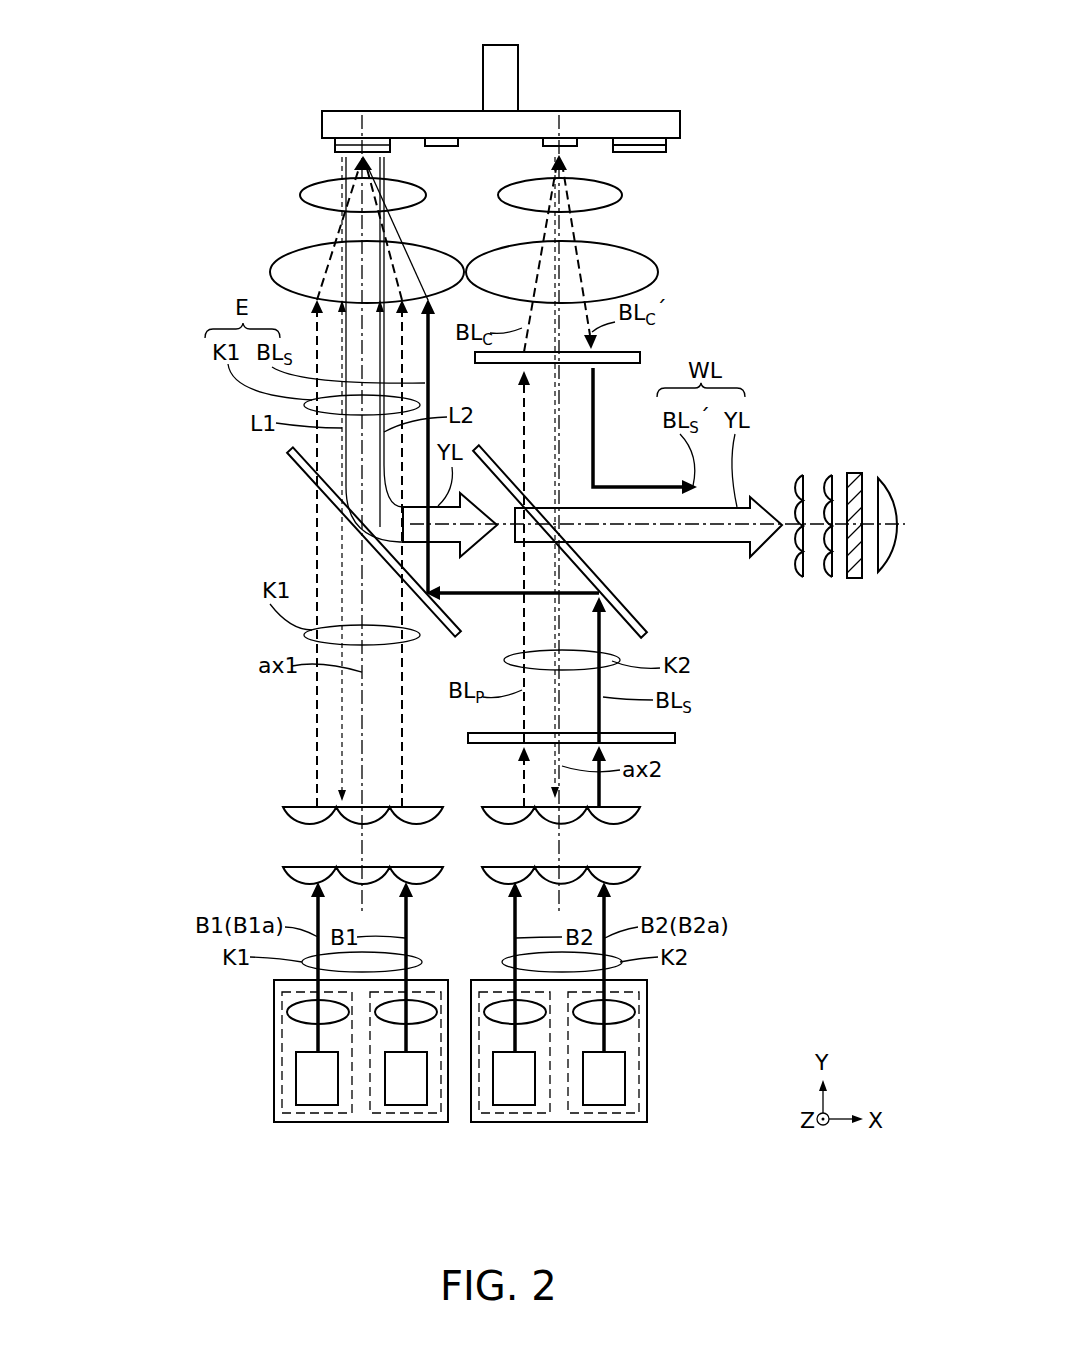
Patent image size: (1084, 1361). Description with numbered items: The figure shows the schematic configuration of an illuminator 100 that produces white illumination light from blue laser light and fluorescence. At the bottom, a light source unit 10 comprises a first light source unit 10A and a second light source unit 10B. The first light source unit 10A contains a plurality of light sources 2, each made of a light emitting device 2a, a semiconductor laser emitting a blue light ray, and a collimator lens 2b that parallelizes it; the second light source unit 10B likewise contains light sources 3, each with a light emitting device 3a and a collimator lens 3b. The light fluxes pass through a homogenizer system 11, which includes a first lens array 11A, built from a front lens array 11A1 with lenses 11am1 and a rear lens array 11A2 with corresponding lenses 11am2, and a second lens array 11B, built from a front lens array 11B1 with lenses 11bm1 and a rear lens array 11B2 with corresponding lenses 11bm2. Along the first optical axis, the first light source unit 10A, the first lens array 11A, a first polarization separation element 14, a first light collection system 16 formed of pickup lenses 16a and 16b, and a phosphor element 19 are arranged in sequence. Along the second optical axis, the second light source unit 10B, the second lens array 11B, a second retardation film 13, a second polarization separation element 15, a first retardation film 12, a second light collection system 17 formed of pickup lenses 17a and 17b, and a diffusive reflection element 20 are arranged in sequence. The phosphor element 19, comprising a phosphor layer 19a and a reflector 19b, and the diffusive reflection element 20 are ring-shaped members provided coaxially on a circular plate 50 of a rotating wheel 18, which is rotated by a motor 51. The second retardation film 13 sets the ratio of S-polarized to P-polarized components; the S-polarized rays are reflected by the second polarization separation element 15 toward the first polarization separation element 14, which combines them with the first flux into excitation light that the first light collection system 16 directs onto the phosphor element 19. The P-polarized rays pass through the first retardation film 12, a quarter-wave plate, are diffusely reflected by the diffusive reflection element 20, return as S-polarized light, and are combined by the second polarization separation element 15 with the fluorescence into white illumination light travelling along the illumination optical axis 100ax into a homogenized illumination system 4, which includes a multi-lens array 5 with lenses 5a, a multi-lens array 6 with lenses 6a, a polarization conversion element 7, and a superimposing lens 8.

The illuminator 100 is at (822, 92).
The illumination optical axis 100ax is at (735, 543).
The rotating wheel 18 is at (626, 88).
The motor 51 is at (519, 80).
The circular plate 50 is at (682, 125).
The phosphor element 19 is at (526, 153).
The phosphor layer 19a is at (666, 150).
The reflector 19b is at (666, 141).
The diffusive reflection element 20 is at (447, 147).
The first light collection system 16 is at (318, 240).
The pickup lens 16a is at (292, 262).
The pickup lens 16b is at (325, 202).
The second light collection system 17 is at (619, 240).
The pickup lens 17a is at (645, 270).
The pickup lens 17b is at (605, 193).
The first retardation film 12 is at (640, 356).
The second retardation film 13 is at (676, 738).
The first polarization separation element 14 is at (296, 458).
The second polarization separation element 15 is at (620, 605).
The homogenized illumination system 4 is at (836, 500).
The multi-lens array 5 is at (791, 521).
The lenses 5a is at (797, 574).
The multi-lens array 6 is at (825, 521).
The lenses 6a is at (827, 574).
The polarization conversion element 7 is at (855, 470).
The superimposing lens 8 is at (886, 490).
The homogenizer system 11 is at (463, 841).
The first lens array 11A is at (289, 841).
The front lens array 11A1 is at (339, 891).
The rear lens array 11A2 is at (316, 791).
The lenses 11am1 is at (420, 880).
The lenses 11am2 is at (297, 812).
The second lens array 11B is at (641, 835).
The front lens array 11B1 is at (613, 885).
The rear lens array 11B2 is at (596, 791).
The lenses 11bm1 is at (625, 880).
The lenses 11bm2 is at (498, 812).
The light source unit 10 is at (455, 1055).
The first light source unit 10A is at (305, 1036).
The second light source unit 10B is at (610, 1036).
The light sources 2 is at (305, 1022).
The light emitting device 2a is at (297, 1065).
The collimator lens 2b is at (287, 1004).
The light sources 3 is at (610, 1022).
The light emitting device 3a is at (618, 1105).
The collimator lens 3b is at (505, 1000).